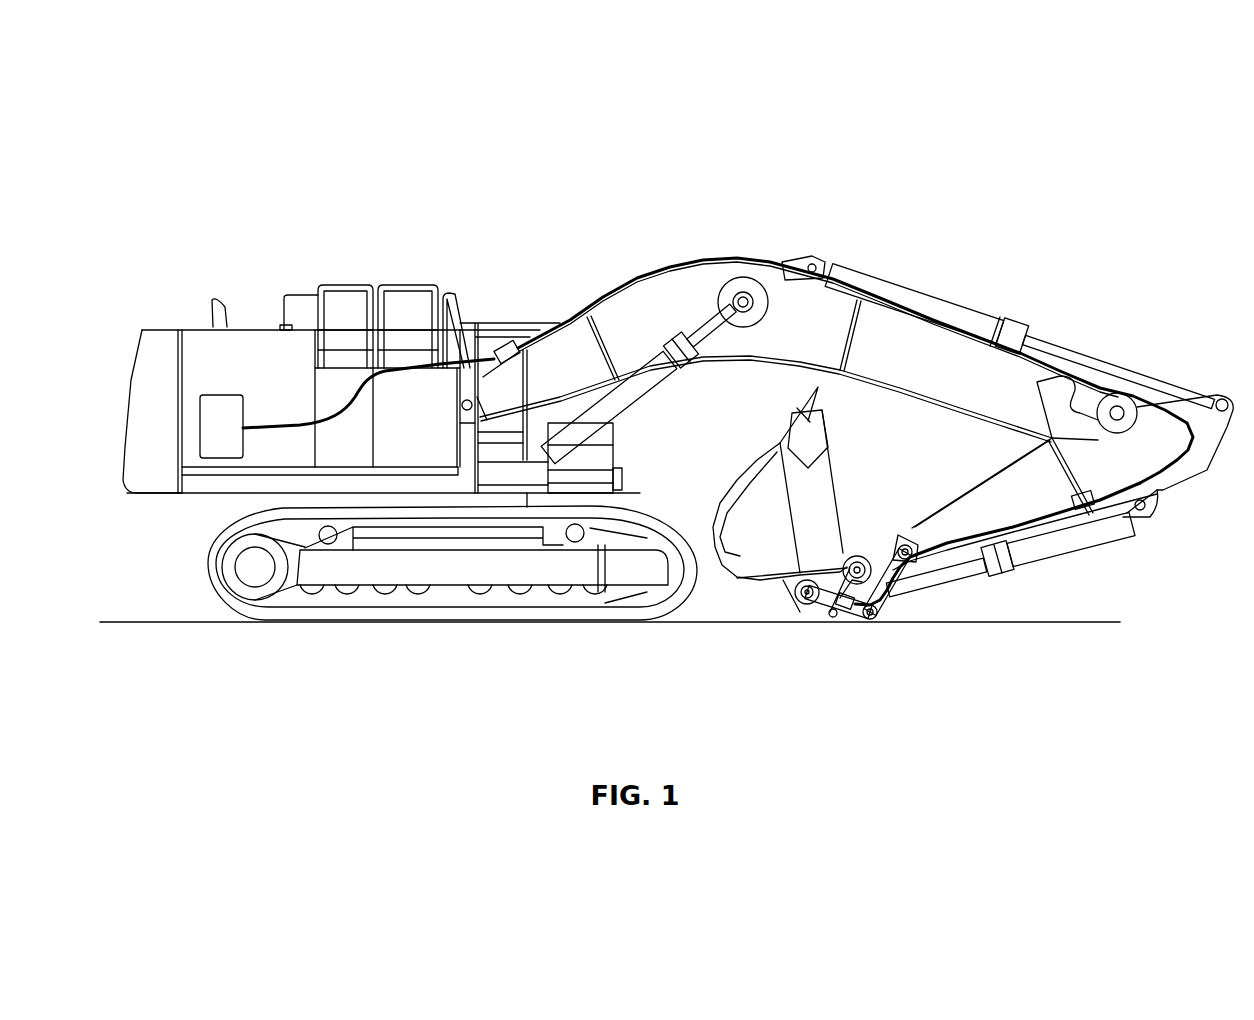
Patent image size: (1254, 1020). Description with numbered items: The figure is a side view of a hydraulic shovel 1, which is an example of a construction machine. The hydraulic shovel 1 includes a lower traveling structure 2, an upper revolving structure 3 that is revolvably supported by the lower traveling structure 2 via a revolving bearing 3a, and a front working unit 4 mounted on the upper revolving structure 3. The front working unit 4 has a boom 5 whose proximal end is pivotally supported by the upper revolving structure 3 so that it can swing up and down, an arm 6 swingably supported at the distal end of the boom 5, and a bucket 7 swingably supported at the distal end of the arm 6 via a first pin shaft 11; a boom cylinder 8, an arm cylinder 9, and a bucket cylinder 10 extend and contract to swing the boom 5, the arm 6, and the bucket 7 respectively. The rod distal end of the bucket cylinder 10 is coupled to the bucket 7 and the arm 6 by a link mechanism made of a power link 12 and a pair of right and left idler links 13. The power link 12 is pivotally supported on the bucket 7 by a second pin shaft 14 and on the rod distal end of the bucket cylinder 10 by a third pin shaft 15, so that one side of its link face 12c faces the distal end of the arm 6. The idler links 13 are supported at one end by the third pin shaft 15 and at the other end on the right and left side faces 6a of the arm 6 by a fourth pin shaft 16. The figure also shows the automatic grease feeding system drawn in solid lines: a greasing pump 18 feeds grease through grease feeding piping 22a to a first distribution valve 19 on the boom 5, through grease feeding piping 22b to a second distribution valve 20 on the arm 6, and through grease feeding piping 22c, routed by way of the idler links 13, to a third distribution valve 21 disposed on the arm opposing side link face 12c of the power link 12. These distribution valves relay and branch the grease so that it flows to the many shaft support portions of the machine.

The hydraulic shovel 1 is at (666, 404).
The lower traveling structure 2 is at (502, 568).
The upper revolving structure 3 is at (262, 300).
The revolving bearing 3a is at (426, 500).
The front working unit 4 is at (856, 425).
The boom 5 is at (690, 300).
The arm 6 is at (1063, 499).
The side faces of the arm 6a is at (975, 503).
The bucket 7 is at (753, 555).
The boom cylinder 8 is at (648, 386).
The arm cylinder 9 is at (958, 315).
The bucket cylinder 10 is at (1025, 545).
The first pin shaft 11 is at (867, 560).
The power link 12 is at (834, 562).
The link face 12c is at (848, 566).
The idler links 13 is at (890, 596).
The second pin shaft 14 is at (807, 595).
The third pin shaft 15 is at (872, 618).
The fourth pin shaft 16 is at (908, 545).
The greasing pump 18 is at (217, 413).
The first distribution valve 19 is at (507, 344).
The second distribution valve 20 is at (1087, 507).
The third distribution valve 21 is at (843, 607).
The grease feeding piping 22a is at (348, 405).
The grease feeding piping 22b is at (633, 286).
The grease feeding piping 22c is at (1013, 530).